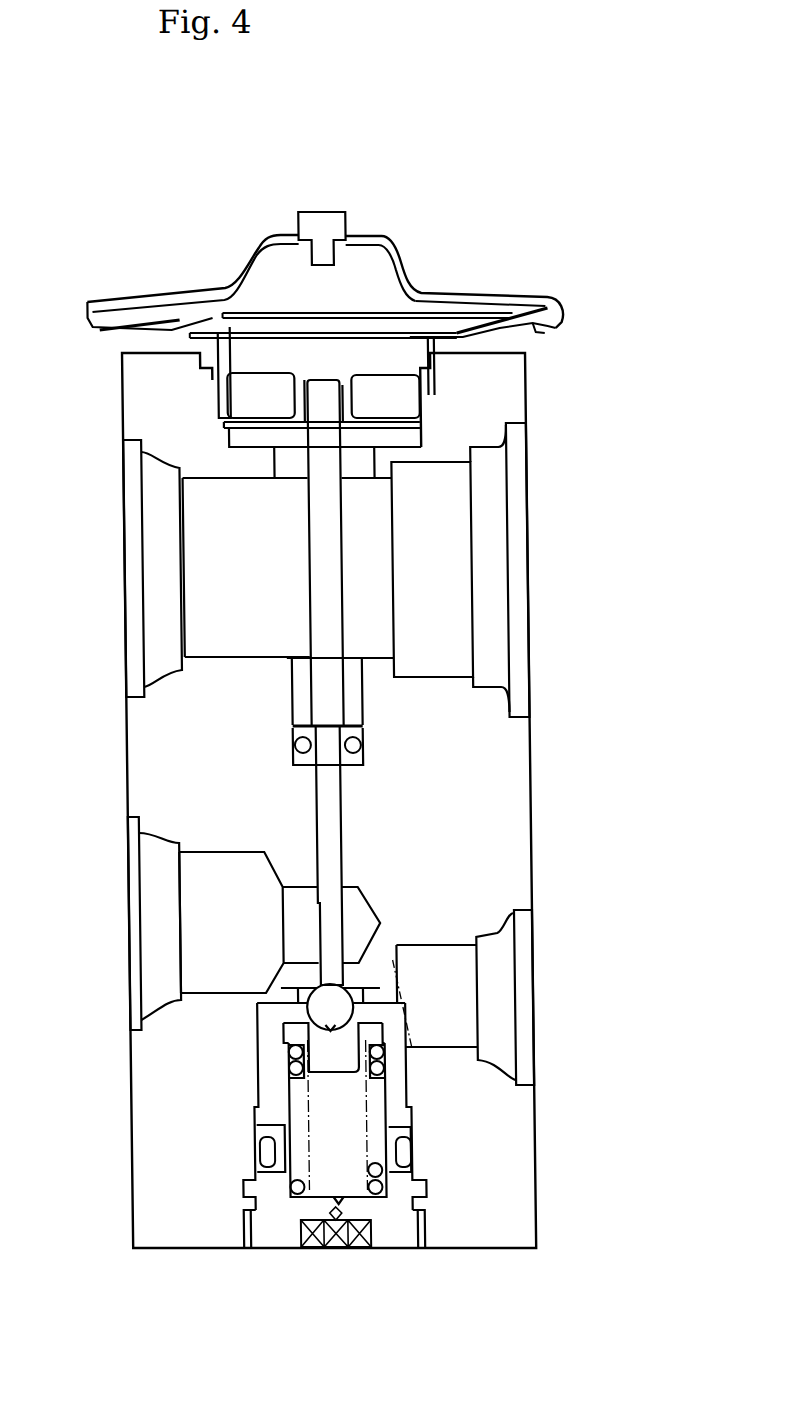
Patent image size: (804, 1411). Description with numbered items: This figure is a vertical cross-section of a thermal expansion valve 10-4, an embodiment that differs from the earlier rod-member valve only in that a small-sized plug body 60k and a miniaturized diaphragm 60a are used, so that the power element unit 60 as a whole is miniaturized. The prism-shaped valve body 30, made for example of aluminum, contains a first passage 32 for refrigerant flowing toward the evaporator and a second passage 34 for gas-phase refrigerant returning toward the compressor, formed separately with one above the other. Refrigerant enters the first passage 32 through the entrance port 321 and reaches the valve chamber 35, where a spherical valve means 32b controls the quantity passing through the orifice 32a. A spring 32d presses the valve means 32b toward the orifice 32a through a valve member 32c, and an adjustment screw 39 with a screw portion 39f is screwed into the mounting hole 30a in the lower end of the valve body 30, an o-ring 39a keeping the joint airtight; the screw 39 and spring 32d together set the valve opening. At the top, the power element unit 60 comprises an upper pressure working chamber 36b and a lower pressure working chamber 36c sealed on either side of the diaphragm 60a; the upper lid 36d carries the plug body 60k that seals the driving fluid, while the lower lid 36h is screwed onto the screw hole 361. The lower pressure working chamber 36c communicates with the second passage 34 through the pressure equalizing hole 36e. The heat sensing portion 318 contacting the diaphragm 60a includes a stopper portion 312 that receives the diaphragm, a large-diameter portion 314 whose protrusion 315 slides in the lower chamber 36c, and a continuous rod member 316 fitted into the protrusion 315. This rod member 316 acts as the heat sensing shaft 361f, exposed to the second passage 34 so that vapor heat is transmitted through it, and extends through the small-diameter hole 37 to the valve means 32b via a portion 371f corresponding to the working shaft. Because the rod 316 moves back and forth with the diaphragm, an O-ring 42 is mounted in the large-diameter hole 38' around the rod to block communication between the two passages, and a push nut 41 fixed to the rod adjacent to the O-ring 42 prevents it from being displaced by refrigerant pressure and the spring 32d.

The thermal expansion valve 10-4 is at (107, 232).
The valve body 30 is at (510, 383).
The mounting hole 30a is at (416, 1220).
The first passage 32 is at (200, 857).
The orifice 32a is at (336, 963).
The valve means 32b is at (330, 1012).
The valve member 32c is at (321, 1052).
The spring 32d is at (288, 1068).
The entrance port 321 is at (529, 952).
The second passage 34 is at (493, 690).
The valve chamber 35 is at (344, 1107).
The upper pressure working chamber 36b is at (362, 262).
The lower pressure working chamber 36c is at (247, 388).
The upper lid 36d is at (160, 302).
The pressure equalizing hole 36e is at (289, 470).
The lower lid 36h is at (532, 325).
The small-diameter hole 37 is at (331, 833).
The large-diameter hole 38' is at (460, 698).
The adjustment screw 39 is at (389, 1242).
The o-ring 39a is at (243, 1152).
The screw portion 39f is at (231, 1232).
The push nut 41 is at (308, 723).
The O-ring 42 is at (292, 750).
The power element unit 60 is at (588, 304).
The diaphragm 60a is at (460, 315).
The plug body 60k is at (312, 232).
The stopper portion 312 is at (375, 318).
The large-diameter portion 314 is at (388, 355).
The protrusion 315 is at (228, 400).
The rod member 316 is at (327, 530).
The heat sensing portion 318 is at (341, 570).
The screw hole 361 is at (460, 400).
The heat sensing shaft 361f is at (317, 582).
The working shaft portion 371f is at (325, 933).